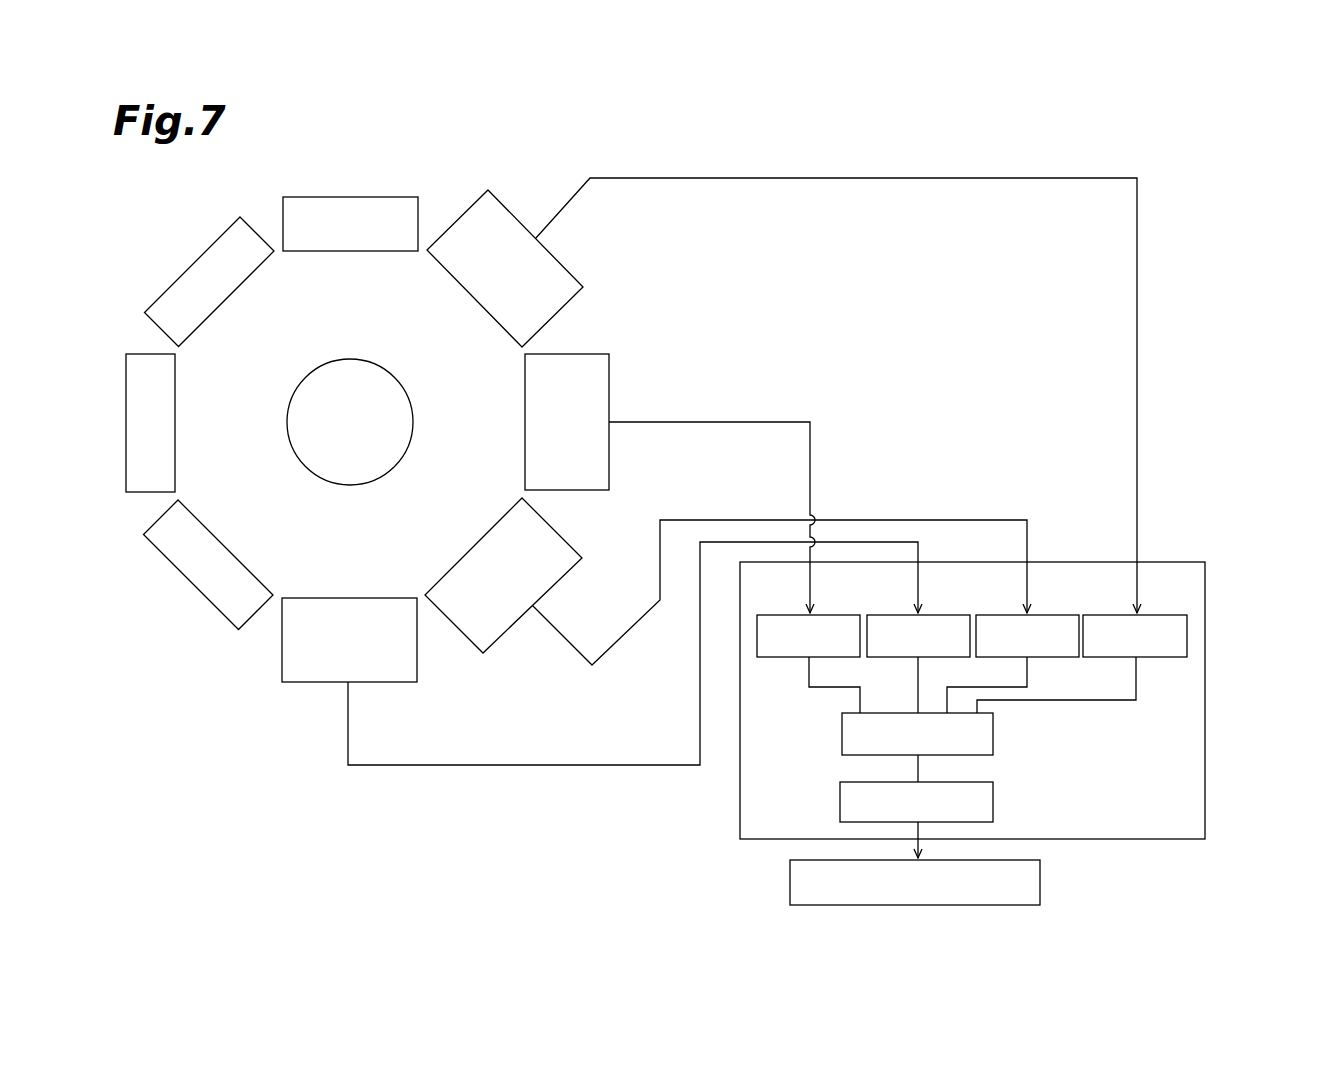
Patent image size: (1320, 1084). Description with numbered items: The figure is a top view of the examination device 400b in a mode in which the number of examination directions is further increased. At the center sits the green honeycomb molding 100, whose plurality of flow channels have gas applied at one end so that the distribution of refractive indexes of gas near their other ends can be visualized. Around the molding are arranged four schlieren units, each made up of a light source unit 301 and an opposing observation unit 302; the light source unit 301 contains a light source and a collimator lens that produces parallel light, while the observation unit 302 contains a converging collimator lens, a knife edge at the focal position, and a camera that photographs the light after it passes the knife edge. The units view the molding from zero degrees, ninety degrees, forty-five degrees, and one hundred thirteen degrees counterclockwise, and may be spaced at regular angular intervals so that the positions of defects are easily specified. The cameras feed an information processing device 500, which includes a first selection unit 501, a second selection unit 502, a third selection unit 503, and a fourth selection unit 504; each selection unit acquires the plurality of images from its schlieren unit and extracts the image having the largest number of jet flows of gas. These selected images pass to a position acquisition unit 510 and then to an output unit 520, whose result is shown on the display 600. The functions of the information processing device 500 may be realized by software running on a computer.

The green honeycomb molding 100 is at (387, 368).
The light source unit 301 is at (357, 197).
The observation unit 302 is at (565, 263).
The examination device 400b is at (1183, 188).
The information processing device 500 is at (1012, 700).
The first selection unit 501 is at (848, 599).
The second selection unit 502 is at (955, 599).
The third selection unit 503 is at (1065, 599).
The fourth selection unit 504 is at (1173, 599).
The position acquisition unit 510 is at (993, 733).
The output unit 520 is at (993, 802).
The display 600 is at (1040, 883).